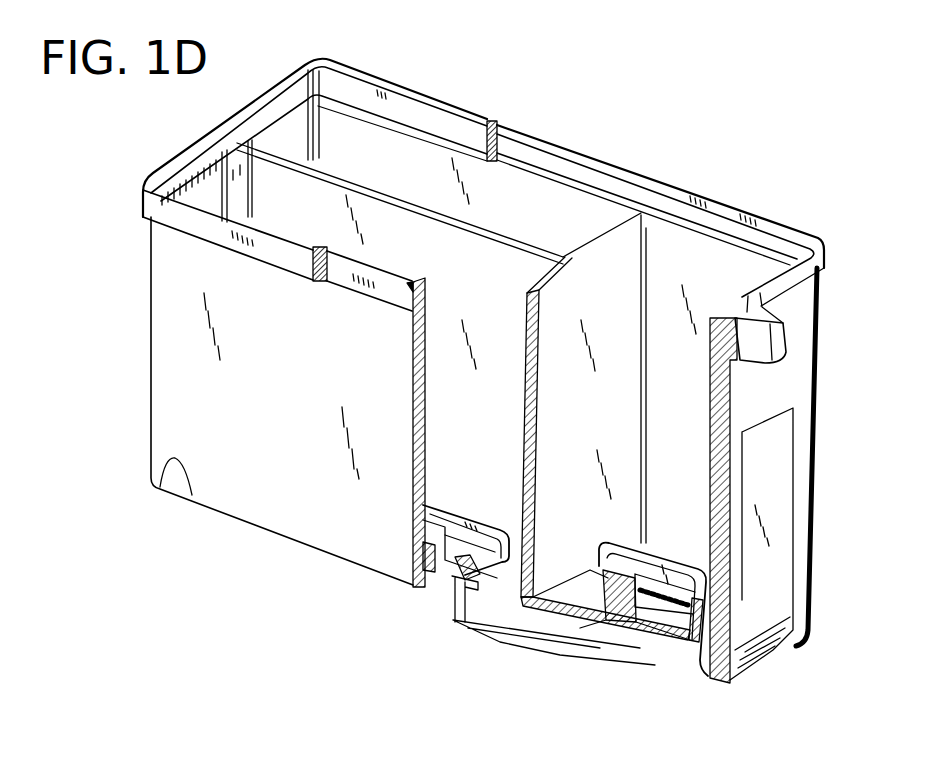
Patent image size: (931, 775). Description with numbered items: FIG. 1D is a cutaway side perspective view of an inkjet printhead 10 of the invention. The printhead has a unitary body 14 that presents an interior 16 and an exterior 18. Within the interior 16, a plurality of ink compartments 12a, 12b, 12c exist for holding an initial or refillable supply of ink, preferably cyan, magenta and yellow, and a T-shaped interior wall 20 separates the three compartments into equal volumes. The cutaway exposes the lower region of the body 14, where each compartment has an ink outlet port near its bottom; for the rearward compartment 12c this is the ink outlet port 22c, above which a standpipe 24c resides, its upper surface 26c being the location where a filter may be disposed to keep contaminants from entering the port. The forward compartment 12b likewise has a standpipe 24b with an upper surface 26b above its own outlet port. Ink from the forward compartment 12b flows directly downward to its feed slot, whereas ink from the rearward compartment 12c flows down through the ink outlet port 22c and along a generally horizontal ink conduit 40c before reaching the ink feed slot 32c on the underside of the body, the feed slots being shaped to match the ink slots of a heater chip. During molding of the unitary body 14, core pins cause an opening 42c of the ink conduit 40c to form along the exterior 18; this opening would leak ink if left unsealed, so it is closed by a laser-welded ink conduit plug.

The inkjet printhead 10 is at (587, 91).
The rearward ink compartment 12a is at (416, 157).
The forward ink compartment 12b is at (694, 269).
The rearward ink compartment 12c is at (291, 205).
The unitary body 14 is at (656, 180).
The interior 16 is at (564, 221).
The exterior 18 is at (294, 399).
The interior wall 20 is at (560, 250).
The ink outlet port 22c is at (452, 620).
The standpipe 24b is at (662, 672).
The standpipe 24c is at (423, 510).
The upper surface 26b is at (670, 570).
The upper surface 26c is at (462, 526).
The ink feed slot 32c is at (642, 652).
The ink conduit 40c is at (533, 618).
The opening of the ink conduit 42c is at (455, 583).